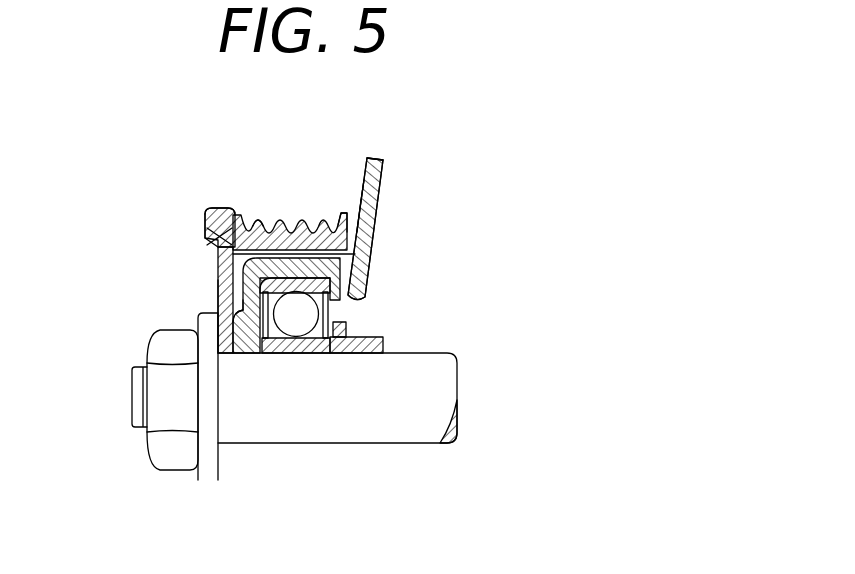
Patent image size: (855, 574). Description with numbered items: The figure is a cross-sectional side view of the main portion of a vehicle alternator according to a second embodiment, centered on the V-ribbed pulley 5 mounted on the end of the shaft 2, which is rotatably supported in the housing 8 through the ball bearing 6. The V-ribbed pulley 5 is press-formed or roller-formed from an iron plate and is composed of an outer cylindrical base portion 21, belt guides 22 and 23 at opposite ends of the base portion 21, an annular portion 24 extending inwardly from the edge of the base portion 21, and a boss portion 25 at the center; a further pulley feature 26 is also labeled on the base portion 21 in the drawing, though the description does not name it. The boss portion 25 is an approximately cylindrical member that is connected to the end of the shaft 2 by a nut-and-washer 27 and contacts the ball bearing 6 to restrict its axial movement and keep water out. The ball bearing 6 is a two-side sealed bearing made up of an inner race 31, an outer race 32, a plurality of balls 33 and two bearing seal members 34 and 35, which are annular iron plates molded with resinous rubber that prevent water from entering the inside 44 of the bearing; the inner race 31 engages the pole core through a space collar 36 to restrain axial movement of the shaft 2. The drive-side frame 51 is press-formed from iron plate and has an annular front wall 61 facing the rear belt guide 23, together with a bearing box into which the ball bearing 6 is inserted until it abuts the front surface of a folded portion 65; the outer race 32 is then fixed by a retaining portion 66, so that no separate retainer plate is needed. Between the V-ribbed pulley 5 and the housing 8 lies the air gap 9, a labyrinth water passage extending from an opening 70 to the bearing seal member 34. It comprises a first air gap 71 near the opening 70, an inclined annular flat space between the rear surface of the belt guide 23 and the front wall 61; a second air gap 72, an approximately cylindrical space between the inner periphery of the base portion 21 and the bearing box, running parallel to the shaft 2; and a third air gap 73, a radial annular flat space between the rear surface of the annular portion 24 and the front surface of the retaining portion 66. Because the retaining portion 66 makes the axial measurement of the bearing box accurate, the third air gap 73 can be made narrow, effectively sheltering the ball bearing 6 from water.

The shaft 2 is at (412, 418).
The V-ribbed pulley 5 is at (192, 200).
The ball bearing 6 is at (347, 310).
The housing 8 is at (365, 229).
The air gap 9 is at (205, 230).
The outer cylindrical base portion 21 is at (283, 220).
The belt guide 22 is at (213, 210).
The belt guide 23 is at (340, 214).
The annular portion 24 is at (216, 268).
The boss portion 25 is at (238, 353).
The tooth 26 is at (262, 222).
The nut-and-washer 27 is at (163, 342).
The inner race 31 is at (302, 357).
The outer race 32 is at (218, 293).
The balls 33 is at (292, 318).
The bearing seal member 34 is at (233, 320).
The bearing seal member 35 is at (347, 327).
The space collar 36 is at (387, 346).
The inside of the bearing 44 is at (328, 345).
The drive-side frame 51 is at (395, 163).
The front wall 61 is at (381, 158).
The folded portion 65 is at (345, 283).
The retaining portion 66 is at (233, 312).
The opening 70 is at (353, 210).
The first air gap 71 is at (350, 233).
The second air gap 72 is at (312, 254).
The third air gap 73 is at (205, 235).